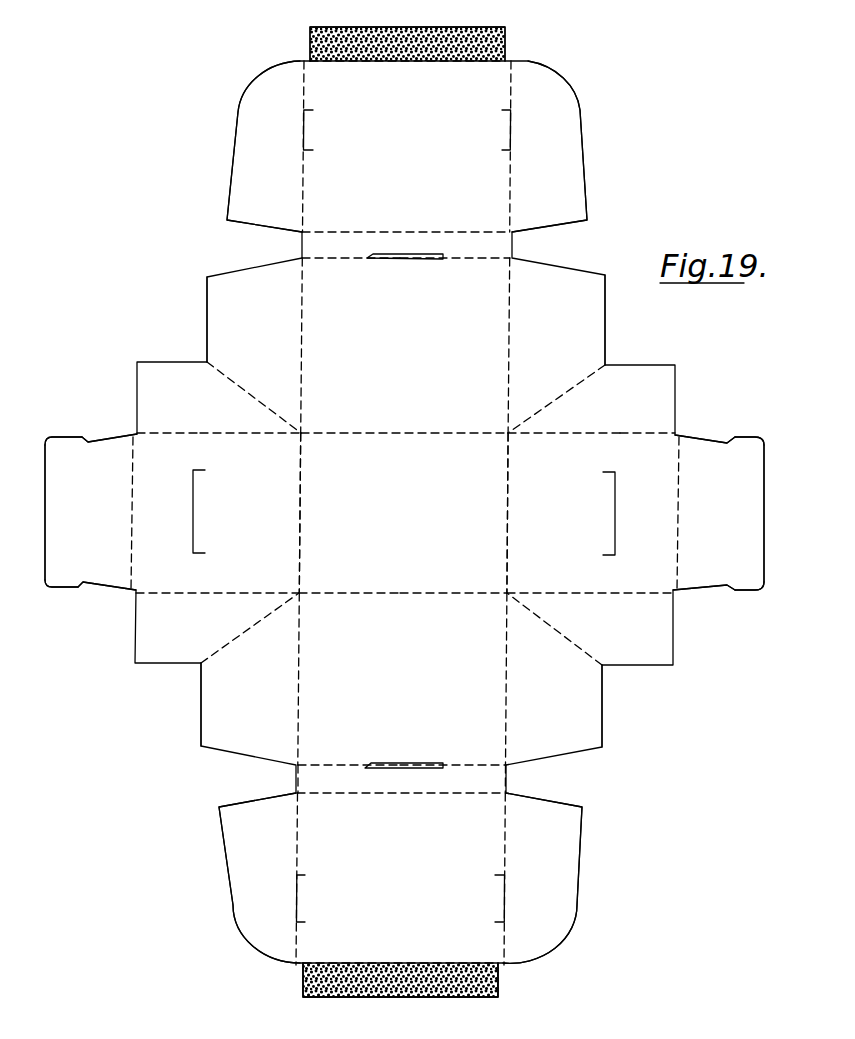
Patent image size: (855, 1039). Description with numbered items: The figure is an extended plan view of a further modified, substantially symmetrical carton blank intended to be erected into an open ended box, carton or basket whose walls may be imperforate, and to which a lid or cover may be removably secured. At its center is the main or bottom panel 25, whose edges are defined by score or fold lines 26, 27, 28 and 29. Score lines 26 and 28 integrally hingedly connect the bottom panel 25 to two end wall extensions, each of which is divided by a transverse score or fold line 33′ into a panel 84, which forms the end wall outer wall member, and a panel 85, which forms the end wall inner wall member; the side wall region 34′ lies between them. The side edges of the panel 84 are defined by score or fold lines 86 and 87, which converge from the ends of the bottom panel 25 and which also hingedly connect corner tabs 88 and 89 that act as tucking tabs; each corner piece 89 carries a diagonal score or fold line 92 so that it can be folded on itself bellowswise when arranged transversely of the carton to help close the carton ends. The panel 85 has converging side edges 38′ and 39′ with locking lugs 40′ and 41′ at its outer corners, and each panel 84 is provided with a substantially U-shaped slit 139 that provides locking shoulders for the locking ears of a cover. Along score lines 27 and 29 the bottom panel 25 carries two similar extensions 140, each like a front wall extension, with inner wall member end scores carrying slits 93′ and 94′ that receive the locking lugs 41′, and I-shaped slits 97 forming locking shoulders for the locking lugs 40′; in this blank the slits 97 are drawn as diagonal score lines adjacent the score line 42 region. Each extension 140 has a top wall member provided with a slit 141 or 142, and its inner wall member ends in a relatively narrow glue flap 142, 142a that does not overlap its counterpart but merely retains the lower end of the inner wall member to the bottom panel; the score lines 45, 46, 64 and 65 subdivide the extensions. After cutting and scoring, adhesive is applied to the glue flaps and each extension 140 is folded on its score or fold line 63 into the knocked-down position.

The main panel 25 is at (410, 490).
The score or fold line 26 is at (303, 500).
The score or fold line 27 is at (423, 433).
The score or fold line 28 is at (508, 506).
The score or fold line 29 is at (440, 598).
The transverse score or fold line 33′ is at (132, 505).
The side wall panel 34′ is at (282, 551).
The side edge 38′ is at (113, 441).
The side edge 39′ is at (112, 570).
The locking lug 40′ is at (65, 436).
The locking lug 41′ is at (87, 593).
The fold line 42 is at (322, 265).
The fold line 45 is at (372, 232).
The fold line 46 is at (373, 66).
The score or fold line 63 is at (348, 765).
The fold line 64 is at (333, 797).
The fold line 65 is at (352, 963).
The end wall outer wall member 84 is at (188, 441).
The end wall inner wall member 85 is at (96, 441).
The score or fold line 86 is at (215, 436).
The score or fold line 87 is at (228, 598).
The corner tab 88 is at (215, 322).
The corner tab 89 is at (167, 658).
The diagonal score or fold line 92 is at (232, 625).
The slit 93′ is at (304, 133).
The slit 94′ is at (511, 133).
The I-shaped slit 97 is at (245, 392).
The slit 139 is at (205, 502).
The extension 140 is at (688, 118).
The slit 141 is at (440, 252).
The slit 142 is at (392, 770).
The glue flap 142a is at (498, 980).